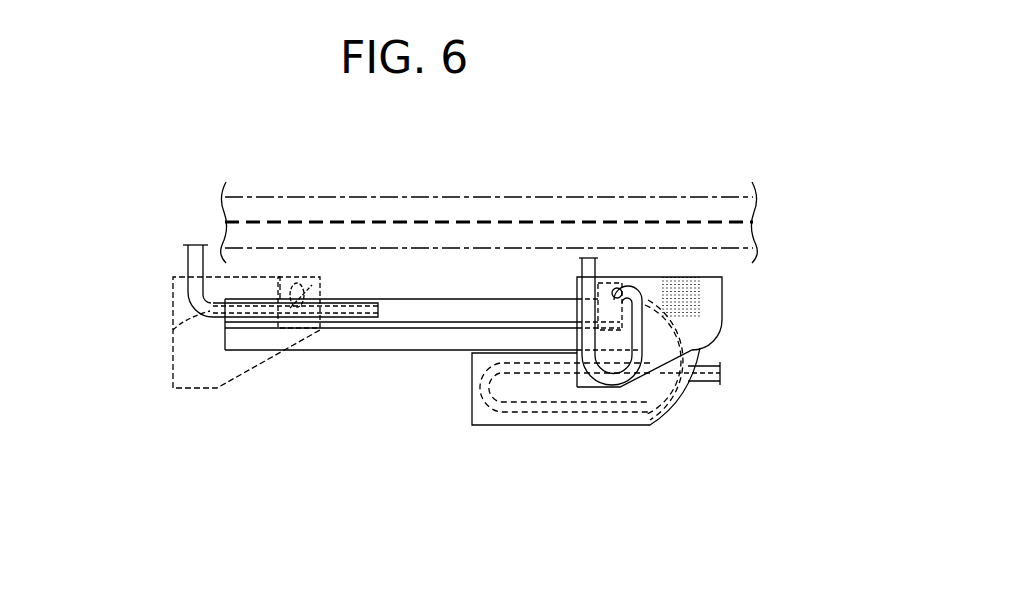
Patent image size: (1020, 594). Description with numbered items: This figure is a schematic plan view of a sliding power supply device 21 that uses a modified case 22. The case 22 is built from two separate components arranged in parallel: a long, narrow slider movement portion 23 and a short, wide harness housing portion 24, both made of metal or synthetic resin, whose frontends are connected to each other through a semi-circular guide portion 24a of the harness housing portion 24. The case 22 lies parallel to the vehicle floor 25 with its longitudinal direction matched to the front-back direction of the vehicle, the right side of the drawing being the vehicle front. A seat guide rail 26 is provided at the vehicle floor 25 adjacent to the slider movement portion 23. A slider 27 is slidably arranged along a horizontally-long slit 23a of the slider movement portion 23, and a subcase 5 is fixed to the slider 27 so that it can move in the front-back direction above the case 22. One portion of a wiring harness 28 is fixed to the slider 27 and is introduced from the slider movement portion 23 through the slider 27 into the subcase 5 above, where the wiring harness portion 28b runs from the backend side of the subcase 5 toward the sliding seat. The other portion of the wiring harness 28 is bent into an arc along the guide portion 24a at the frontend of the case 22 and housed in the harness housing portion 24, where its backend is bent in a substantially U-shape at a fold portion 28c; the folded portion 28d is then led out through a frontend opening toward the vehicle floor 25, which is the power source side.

The subcase 5 is at (170, 376).
The sliding power supply device 21 is at (357, 403).
The case 22 is at (490, 503).
The slider movement portion 23 is at (425, 352).
The slit 23a is at (427, 322).
The harness housing portion 24 is at (492, 427).
The guide portion 24a is at (690, 393).
The vehicle floor 25 is at (323, 385).
The seat guide rail 26 is at (560, 197).
The slider 27 is at (606, 282).
The wiring harness 28 is at (640, 430).
The wiring harness portion in the subcase 28b is at (173, 325).
The fold portion 28c is at (458, 388).
The folded portion 28d is at (528, 360).